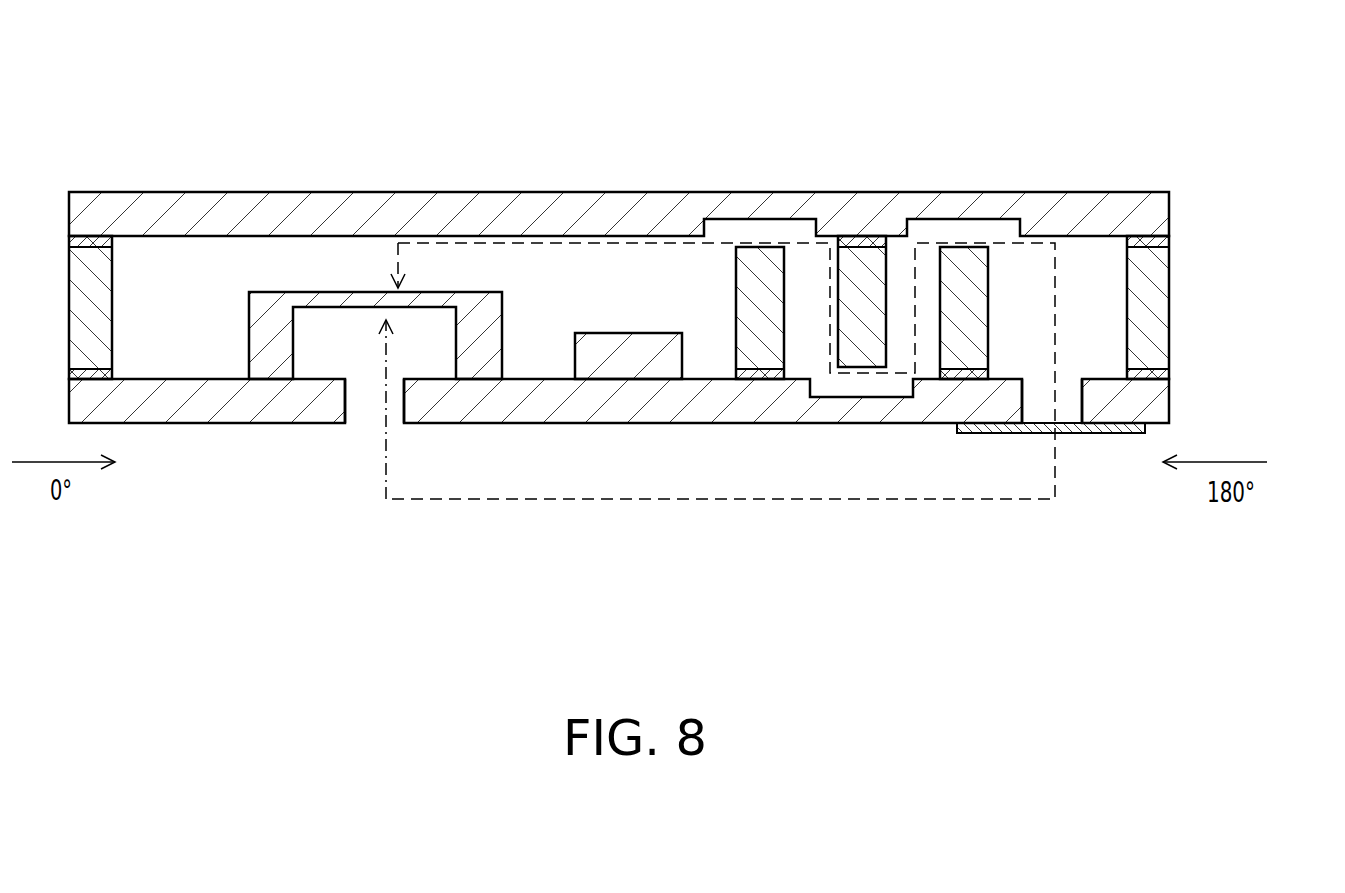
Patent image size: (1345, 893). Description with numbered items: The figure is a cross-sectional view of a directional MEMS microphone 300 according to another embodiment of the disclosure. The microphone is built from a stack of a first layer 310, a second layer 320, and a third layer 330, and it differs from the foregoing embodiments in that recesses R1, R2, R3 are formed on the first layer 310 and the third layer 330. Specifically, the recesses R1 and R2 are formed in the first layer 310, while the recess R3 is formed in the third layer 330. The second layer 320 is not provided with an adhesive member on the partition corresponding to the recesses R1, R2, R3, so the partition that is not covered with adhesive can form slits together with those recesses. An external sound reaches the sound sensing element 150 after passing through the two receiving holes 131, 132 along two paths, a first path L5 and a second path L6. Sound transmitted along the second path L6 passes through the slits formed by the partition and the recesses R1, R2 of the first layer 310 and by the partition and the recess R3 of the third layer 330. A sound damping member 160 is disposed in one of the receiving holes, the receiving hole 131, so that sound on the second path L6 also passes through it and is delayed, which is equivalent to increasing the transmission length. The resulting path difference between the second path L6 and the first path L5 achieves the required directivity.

The directional MEMS microphone 300 is at (1325, 67).
The first layer 310 is at (1142, 207).
The second layer 320 is at (1158, 277).
The third layer 330 is at (1157, 408).
The sound sensing element 150 is at (297, 293).
The sound damping member 160 is at (1122, 428).
The receiving hole 131 is at (1070, 398).
The receiving hole 132 is at (360, 425).
The recess R1 is at (978, 229).
The recess R2 is at (747, 229).
The recess R3 is at (873, 386).
The first path L5 is at (364, 412).
The second path L6 is at (720, 395).